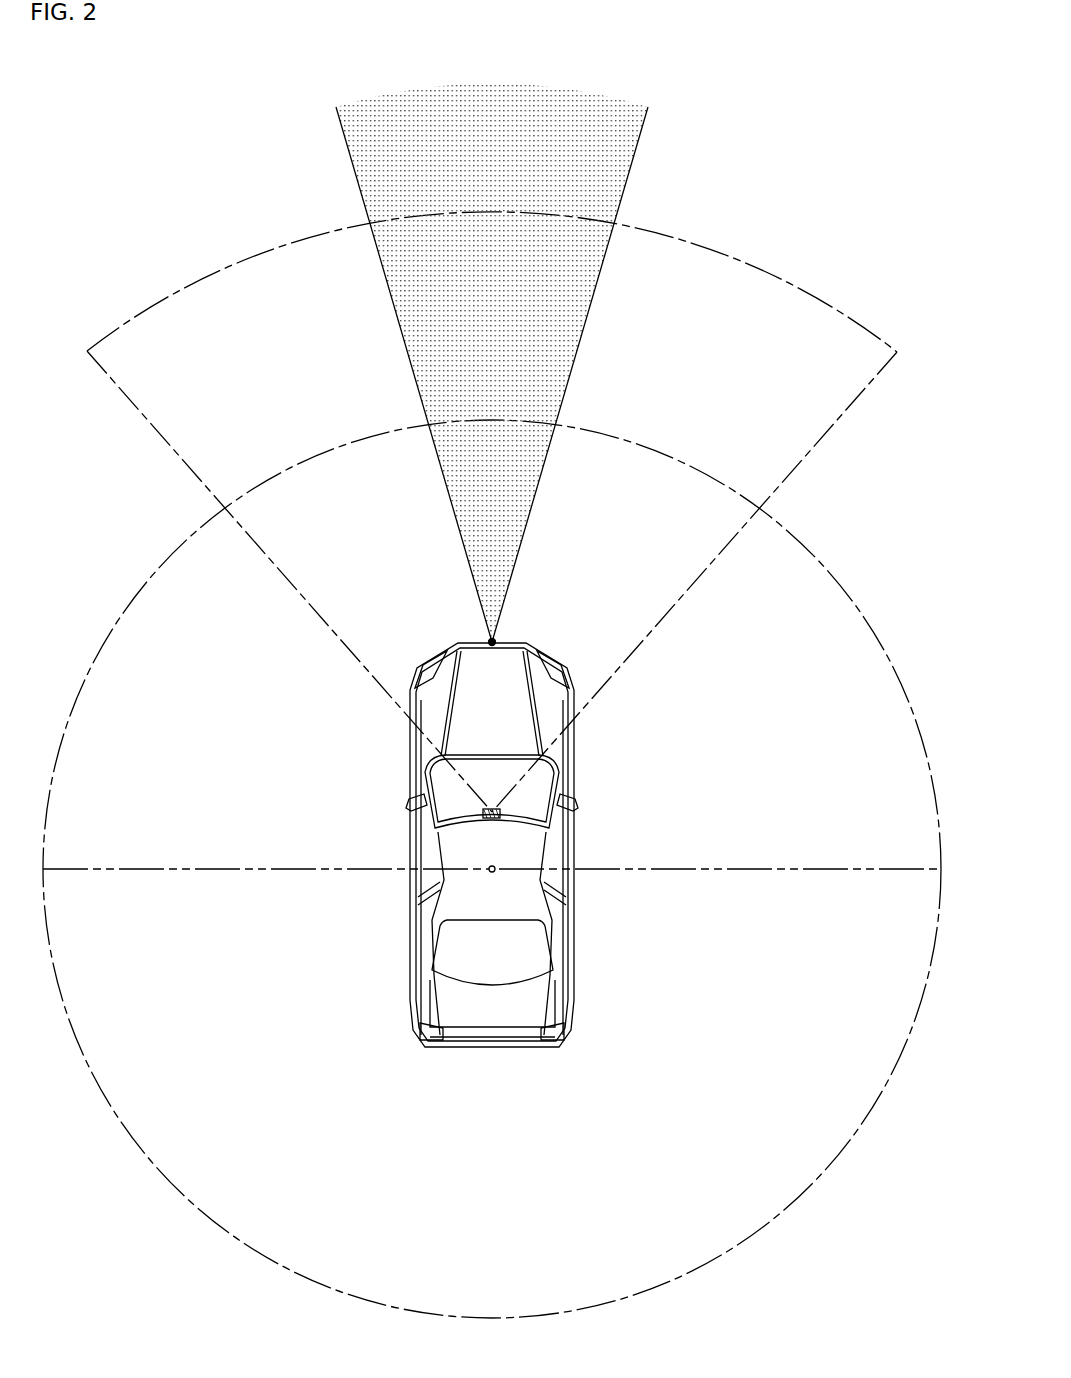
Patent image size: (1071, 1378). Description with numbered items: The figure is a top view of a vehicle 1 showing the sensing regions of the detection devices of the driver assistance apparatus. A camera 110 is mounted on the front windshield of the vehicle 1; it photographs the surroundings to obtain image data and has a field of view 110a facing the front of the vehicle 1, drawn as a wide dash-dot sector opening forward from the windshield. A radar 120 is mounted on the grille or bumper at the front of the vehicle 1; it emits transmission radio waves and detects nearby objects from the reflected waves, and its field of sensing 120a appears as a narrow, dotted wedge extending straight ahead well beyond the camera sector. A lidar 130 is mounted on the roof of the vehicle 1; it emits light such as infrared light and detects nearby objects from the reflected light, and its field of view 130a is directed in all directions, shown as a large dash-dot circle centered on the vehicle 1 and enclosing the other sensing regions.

The vehicle 1 is at (602, 828).
The camera 110 is at (487, 814).
The field of view 110a is at (852, 407).
The radar 120 is at (496, 637).
The field of sensing 120a is at (610, 182).
The lidar 130 is at (492, 872).
The field of view 130a is at (843, 587).